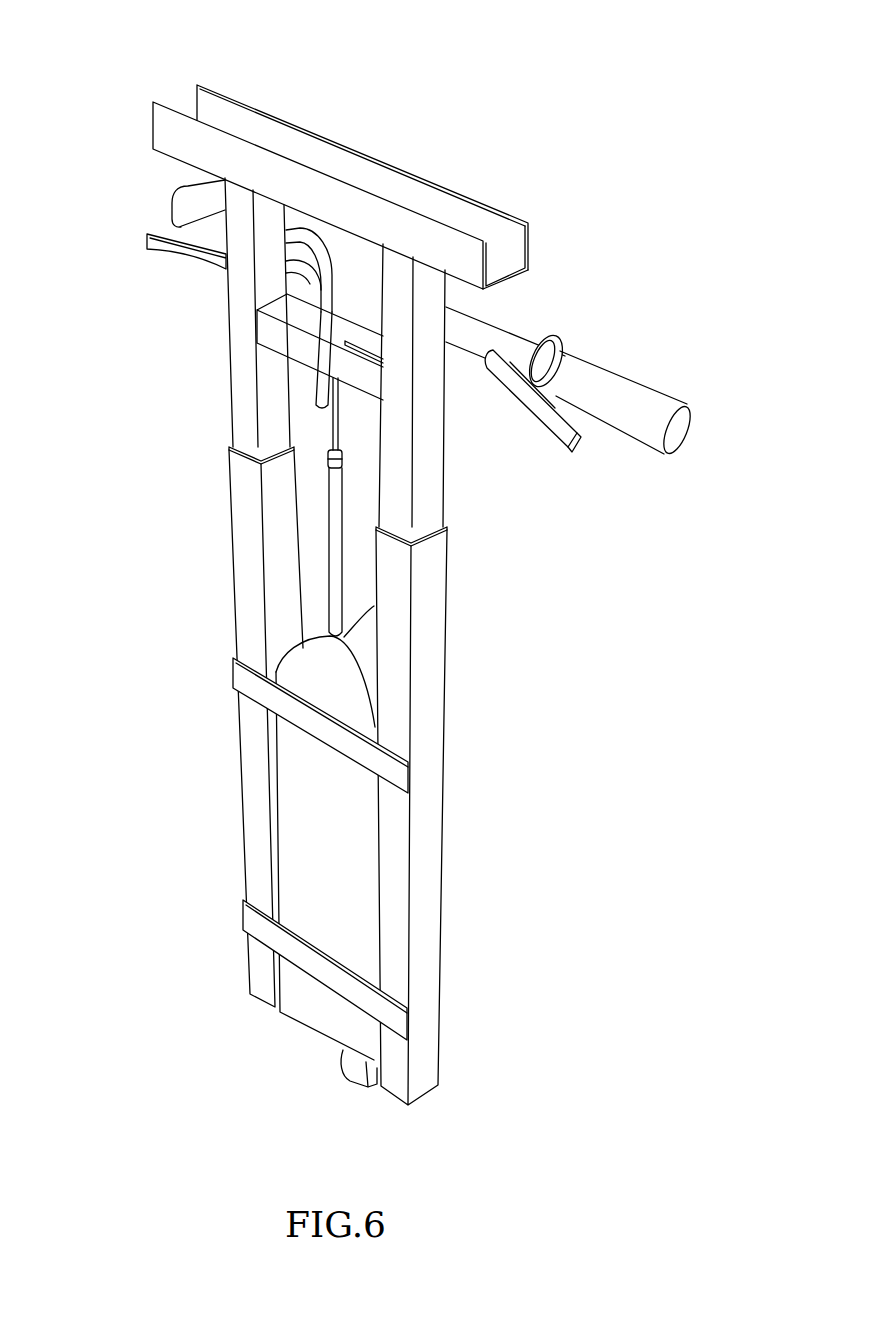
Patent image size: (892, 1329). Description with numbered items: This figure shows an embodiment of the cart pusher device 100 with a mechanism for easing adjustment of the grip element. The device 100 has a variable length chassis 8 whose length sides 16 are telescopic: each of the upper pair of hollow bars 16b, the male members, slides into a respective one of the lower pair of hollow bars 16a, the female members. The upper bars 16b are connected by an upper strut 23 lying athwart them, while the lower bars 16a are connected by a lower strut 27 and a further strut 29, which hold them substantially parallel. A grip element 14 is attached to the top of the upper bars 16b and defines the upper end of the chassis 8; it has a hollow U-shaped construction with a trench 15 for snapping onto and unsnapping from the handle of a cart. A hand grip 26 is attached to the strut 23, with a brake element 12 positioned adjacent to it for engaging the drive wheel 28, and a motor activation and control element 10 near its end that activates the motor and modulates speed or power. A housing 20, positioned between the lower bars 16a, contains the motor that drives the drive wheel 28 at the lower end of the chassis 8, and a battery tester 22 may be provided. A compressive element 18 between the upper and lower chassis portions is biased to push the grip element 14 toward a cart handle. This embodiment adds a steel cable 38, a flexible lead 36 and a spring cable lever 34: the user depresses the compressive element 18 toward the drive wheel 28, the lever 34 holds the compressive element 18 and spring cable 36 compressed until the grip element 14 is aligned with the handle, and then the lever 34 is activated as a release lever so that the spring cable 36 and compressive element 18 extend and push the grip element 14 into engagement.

The device 100 is at (378, 565).
The chassis 8 is at (337, 641).
The motor activation and control element 10 is at (174, 198).
The brake element 12 is at (545, 417).
The grip element 14 is at (365, 187).
The trench 15 is at (505, 262).
The length sides 16 is at (337, 641).
The lower pair of hollow bars 16a is at (335, 776).
The upper pair of hollow bars 16b is at (232, 403).
The compressive element 18 is at (332, 513).
The housing 20 is at (336, 833).
The battery tester 22 is at (373, 343).
The upper strut 23 is at (377, 274).
The hand grip 26 is at (571, 385).
The lower strut 27 is at (253, 920).
The drive wheel 28 is at (347, 1063).
The strut 29 is at (395, 770).
The spring cable lever 34 is at (177, 248).
The flexible lead 36 is at (320, 348).
The steel cable 38 is at (318, 446).